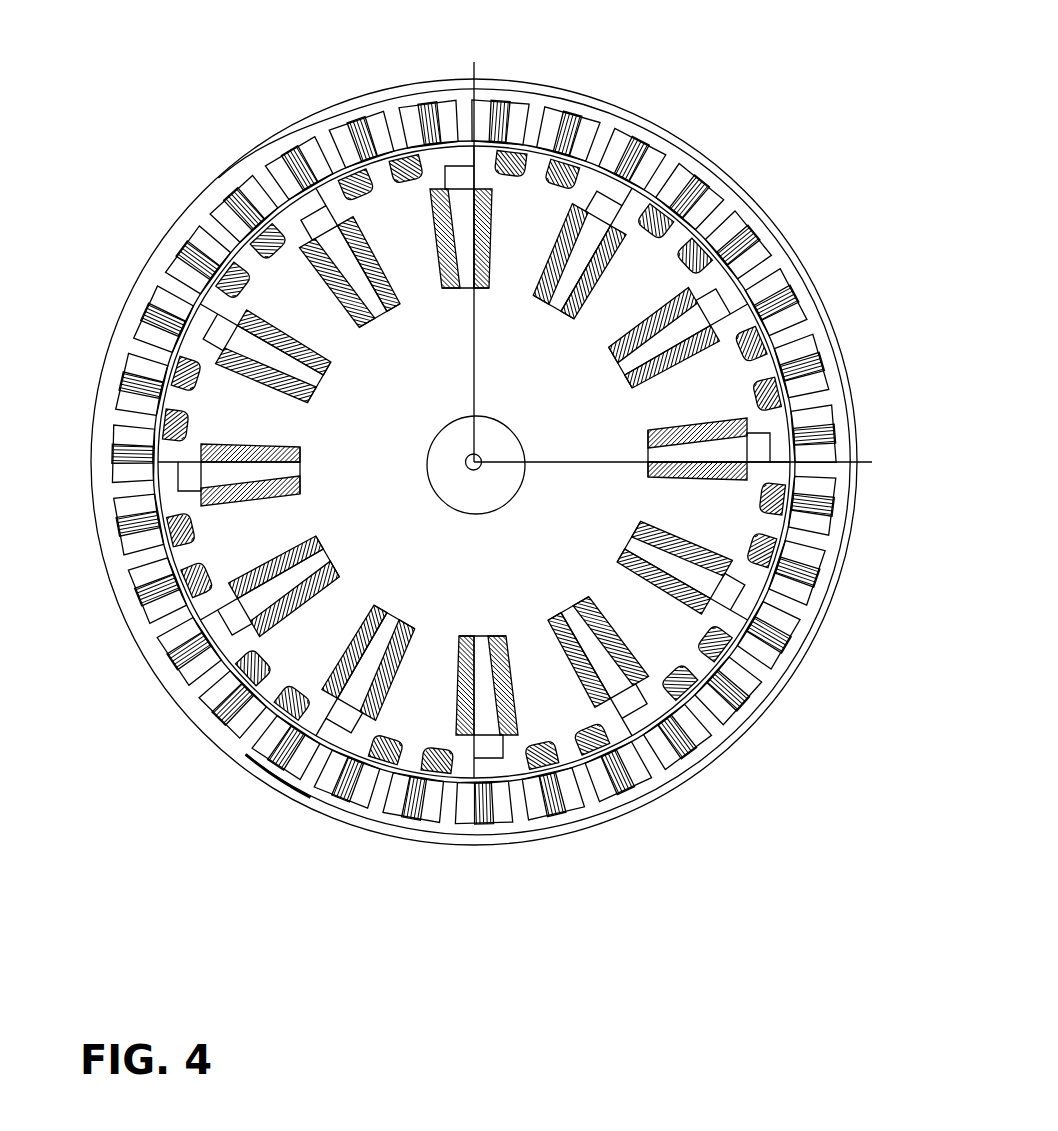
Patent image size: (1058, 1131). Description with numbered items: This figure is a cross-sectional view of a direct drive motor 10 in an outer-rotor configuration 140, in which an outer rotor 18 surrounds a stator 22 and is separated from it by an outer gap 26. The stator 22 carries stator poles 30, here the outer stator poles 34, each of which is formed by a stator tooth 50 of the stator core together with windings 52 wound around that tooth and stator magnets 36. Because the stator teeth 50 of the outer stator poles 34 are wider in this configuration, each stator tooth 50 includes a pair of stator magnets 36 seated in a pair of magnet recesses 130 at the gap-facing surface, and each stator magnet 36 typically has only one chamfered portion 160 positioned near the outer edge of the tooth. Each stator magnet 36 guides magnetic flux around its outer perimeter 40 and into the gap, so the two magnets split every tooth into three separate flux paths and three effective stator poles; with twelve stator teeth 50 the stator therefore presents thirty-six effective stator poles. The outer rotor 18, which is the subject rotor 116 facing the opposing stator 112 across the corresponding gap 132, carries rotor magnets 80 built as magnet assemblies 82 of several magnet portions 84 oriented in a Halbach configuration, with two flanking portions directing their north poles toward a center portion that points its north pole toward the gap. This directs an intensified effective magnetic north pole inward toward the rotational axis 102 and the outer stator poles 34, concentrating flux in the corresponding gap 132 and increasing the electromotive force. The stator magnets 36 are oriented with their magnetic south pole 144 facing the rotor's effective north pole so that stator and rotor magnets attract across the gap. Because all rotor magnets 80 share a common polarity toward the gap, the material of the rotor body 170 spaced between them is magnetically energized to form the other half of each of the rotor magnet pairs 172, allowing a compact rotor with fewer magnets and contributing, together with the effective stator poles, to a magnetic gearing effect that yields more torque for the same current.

The direct drive motor 10 is at (874, 184).
The outer rotor 18 is at (852, 332).
The stator 22 is at (641, 251).
The outer gap 26 is at (802, 518).
The stator poles 30 is at (385, 208).
The outer stator poles 34 is at (280, 285).
The stator magnets 36 is at (782, 547).
The outer perimeter 40 is at (412, 776).
The stator tooth 50 is at (528, 205).
The windings 52 is at (585, 200).
The rotor magnets 80 is at (795, 649).
The magnet assemblies 82 is at (699, 760).
The magnet portions 84 is at (790, 625).
The rotational axis 102 is at (474, 463).
The opposing stator 112 is at (682, 652).
The subject rotor 116 is at (840, 612).
The magnet recess 130 is at (738, 314).
The corresponding gap 132 is at (204, 644).
The outer-rotor configuration 140 is at (880, 440).
The magnetic south pole 144 is at (575, 750).
The chamfered portion 160 is at (722, 249).
The rotor body 170 is at (805, 403).
The rotor magnet pairs 172 is at (282, 786).